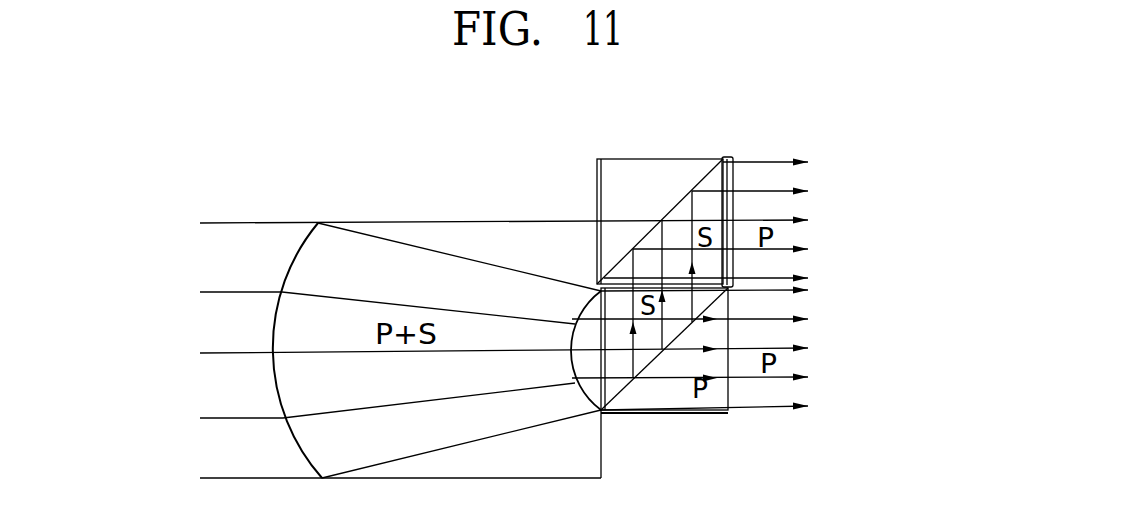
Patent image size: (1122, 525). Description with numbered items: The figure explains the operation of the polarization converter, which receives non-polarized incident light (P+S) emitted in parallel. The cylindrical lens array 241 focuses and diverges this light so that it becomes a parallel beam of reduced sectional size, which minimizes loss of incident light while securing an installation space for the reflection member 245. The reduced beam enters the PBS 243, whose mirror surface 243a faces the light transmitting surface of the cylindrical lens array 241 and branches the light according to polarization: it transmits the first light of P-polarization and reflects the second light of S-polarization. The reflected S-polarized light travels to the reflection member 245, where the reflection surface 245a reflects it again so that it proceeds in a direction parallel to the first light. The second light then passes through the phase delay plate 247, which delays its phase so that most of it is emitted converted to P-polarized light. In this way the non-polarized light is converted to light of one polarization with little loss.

The cylindrical lens array 241 is at (487, 242).
The PBS 243 is at (708, 413).
The mirror surface 243a is at (648, 363).
The reflection member 245 is at (597, 188).
The reflection surface 245a is at (676, 214).
The phase delay plate 247 is at (729, 157).